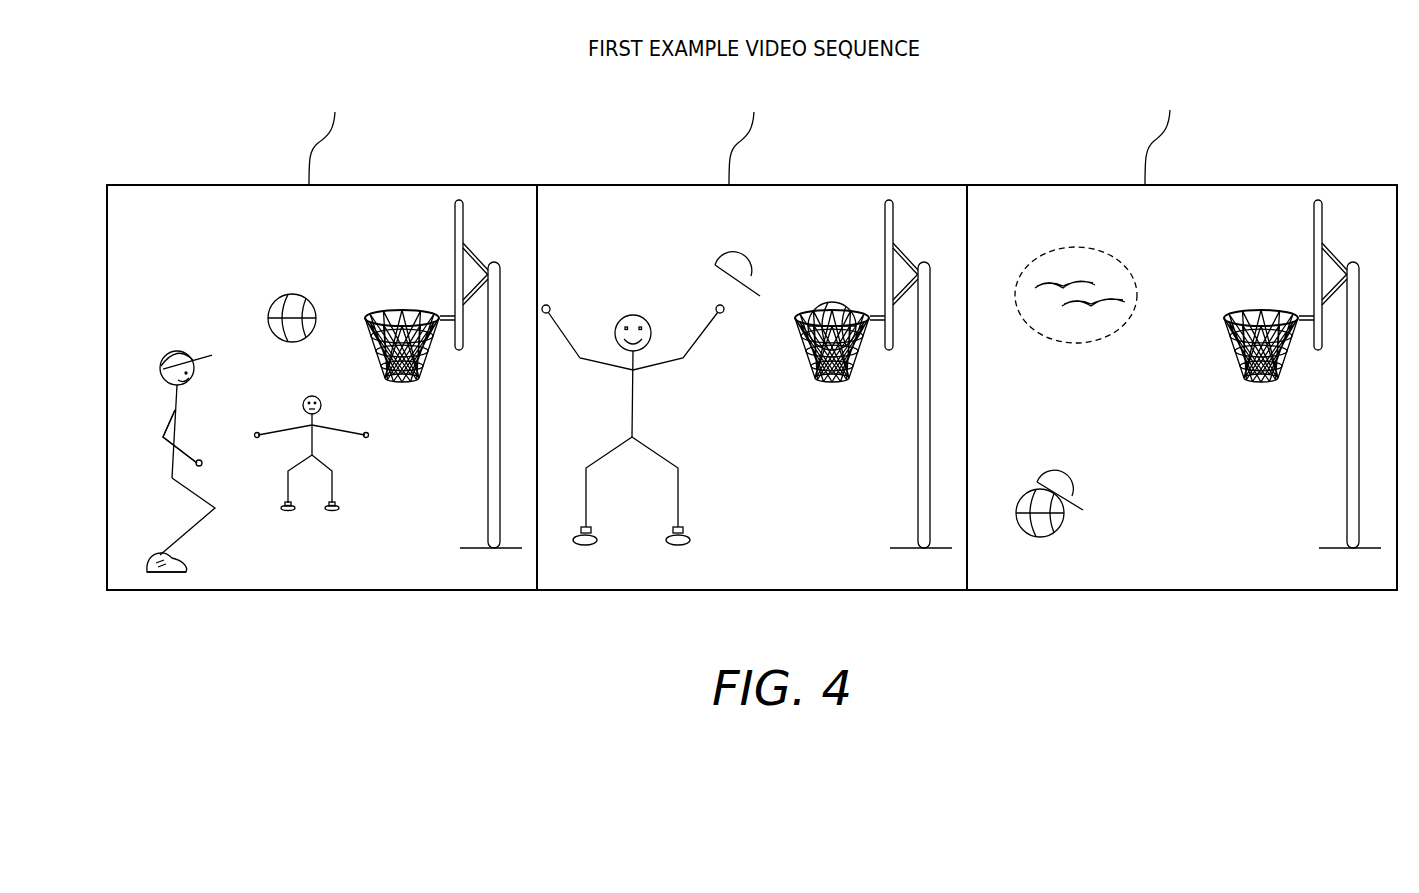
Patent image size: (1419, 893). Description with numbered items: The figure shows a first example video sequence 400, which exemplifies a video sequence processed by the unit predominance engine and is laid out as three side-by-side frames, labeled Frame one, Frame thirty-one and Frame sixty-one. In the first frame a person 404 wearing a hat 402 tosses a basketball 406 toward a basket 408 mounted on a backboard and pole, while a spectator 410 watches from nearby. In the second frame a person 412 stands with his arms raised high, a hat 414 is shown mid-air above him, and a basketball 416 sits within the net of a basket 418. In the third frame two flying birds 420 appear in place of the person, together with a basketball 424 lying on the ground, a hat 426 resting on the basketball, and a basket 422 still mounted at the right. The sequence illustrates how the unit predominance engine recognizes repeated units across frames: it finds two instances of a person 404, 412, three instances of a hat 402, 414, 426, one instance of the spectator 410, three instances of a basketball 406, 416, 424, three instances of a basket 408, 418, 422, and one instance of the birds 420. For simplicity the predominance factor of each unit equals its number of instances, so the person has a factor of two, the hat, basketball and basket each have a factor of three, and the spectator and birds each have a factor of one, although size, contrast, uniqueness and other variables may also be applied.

The first example video sequence 400 is at (1296, 128).
The hat 402 is at (172, 351).
The person 404 is at (168, 449).
The basketball 406 is at (291, 294).
The basket 408 is at (398, 311).
The spectator 410 is at (334, 466).
The person 412 is at (633, 400).
The hat 414 is at (733, 255).
The basketball 416 is at (831, 314).
The basket 418 is at (804, 346).
The flying birds 420 is at (1118, 253).
The basket 422 is at (1226, 358).
The basketball 424 is at (1023, 503).
The hat 426 is at (1062, 478).